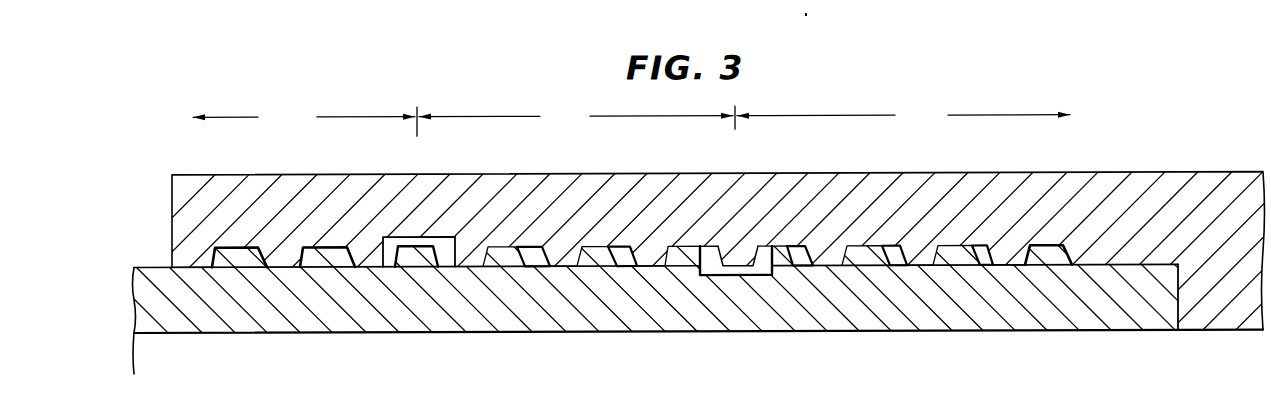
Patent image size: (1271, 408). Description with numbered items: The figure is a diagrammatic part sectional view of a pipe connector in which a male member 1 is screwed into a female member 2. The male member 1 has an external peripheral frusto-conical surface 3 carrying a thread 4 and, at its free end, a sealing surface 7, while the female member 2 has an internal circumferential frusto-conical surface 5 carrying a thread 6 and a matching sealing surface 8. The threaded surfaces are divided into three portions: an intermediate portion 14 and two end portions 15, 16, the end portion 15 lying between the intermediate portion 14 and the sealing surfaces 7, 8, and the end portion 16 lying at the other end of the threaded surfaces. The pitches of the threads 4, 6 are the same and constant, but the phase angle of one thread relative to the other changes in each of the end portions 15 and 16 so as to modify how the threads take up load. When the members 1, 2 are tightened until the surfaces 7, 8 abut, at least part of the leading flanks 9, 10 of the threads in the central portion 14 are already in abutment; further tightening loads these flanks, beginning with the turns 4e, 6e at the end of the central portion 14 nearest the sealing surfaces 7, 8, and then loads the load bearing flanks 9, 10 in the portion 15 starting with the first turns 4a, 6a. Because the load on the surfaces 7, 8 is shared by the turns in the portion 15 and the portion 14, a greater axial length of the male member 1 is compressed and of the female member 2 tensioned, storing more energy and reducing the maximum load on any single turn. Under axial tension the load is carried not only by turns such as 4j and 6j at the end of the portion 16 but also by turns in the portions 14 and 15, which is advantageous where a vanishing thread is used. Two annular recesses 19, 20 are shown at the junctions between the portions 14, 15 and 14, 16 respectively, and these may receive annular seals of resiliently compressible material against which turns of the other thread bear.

The male member 1 is at (804, 316).
The female member 2 is at (727, 176).
The external peripheral frusto-conical surface 3 is at (562, 249).
The thread 4 is at (508, 255).
The first turn of male thread in end portion 15 4a is at (1047, 252).
The turn of male thread at end of central portion 14 4e is at (684, 256).
The turn of male thread in end portion 16 4j is at (238, 252).
The internal circumferential frusto-conical surface 5 is at (865, 249).
The thread 6 is at (920, 267).
The first turn of female thread in end portion 15 6a is at (1007, 258).
The turn of female thread at end of central portion 14 6e is at (648, 260).
The turn of female thread in end portion 16 6j is at (203, 265).
The sealing surface 7 is at (1182, 306).
The sealing surface 8 is at (1177, 308).
The leading flank 9 is at (567, 258).
The leading flank 10 is at (584, 254).
The intermediate portion 14 is at (577, 117).
The end portion 15 is at (903, 117).
The end portion 16 is at (305, 121).
The annular recess 19 is at (745, 276).
The annular recess 20 is at (400, 242).